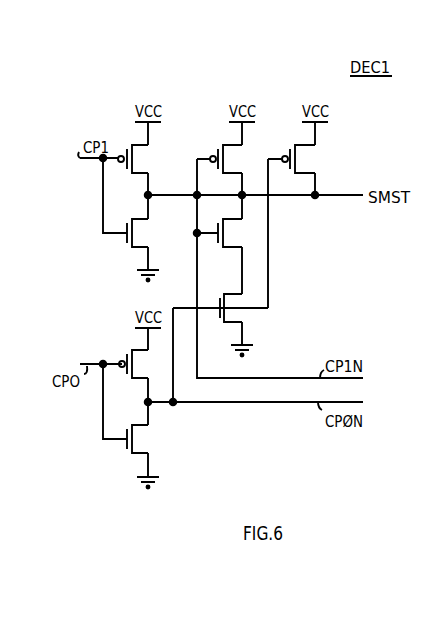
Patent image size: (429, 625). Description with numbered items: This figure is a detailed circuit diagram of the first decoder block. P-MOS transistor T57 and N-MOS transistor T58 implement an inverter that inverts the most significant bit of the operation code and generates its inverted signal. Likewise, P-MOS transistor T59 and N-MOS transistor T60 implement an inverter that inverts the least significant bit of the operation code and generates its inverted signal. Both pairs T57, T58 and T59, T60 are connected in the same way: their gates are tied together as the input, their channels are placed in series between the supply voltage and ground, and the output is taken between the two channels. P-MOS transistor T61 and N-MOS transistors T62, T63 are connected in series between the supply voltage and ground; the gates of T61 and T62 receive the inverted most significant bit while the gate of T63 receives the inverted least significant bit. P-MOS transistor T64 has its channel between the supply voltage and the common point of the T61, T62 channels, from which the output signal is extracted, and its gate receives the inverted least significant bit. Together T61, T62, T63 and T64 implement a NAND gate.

The P-MOS transistor T57 is at (135, 160).
The N-MOS transistor T58 is at (135, 234).
The P-MOS transistor T59 is at (135, 365).
The N-MOS transistor T60 is at (135, 440).
The P-MOS transistor T61 is at (226, 160).
The N-MOS transistor T62 is at (226, 234).
The N-MOS transistor T63 is at (234, 294).
The P-MOS transistor T64 is at (298, 160).